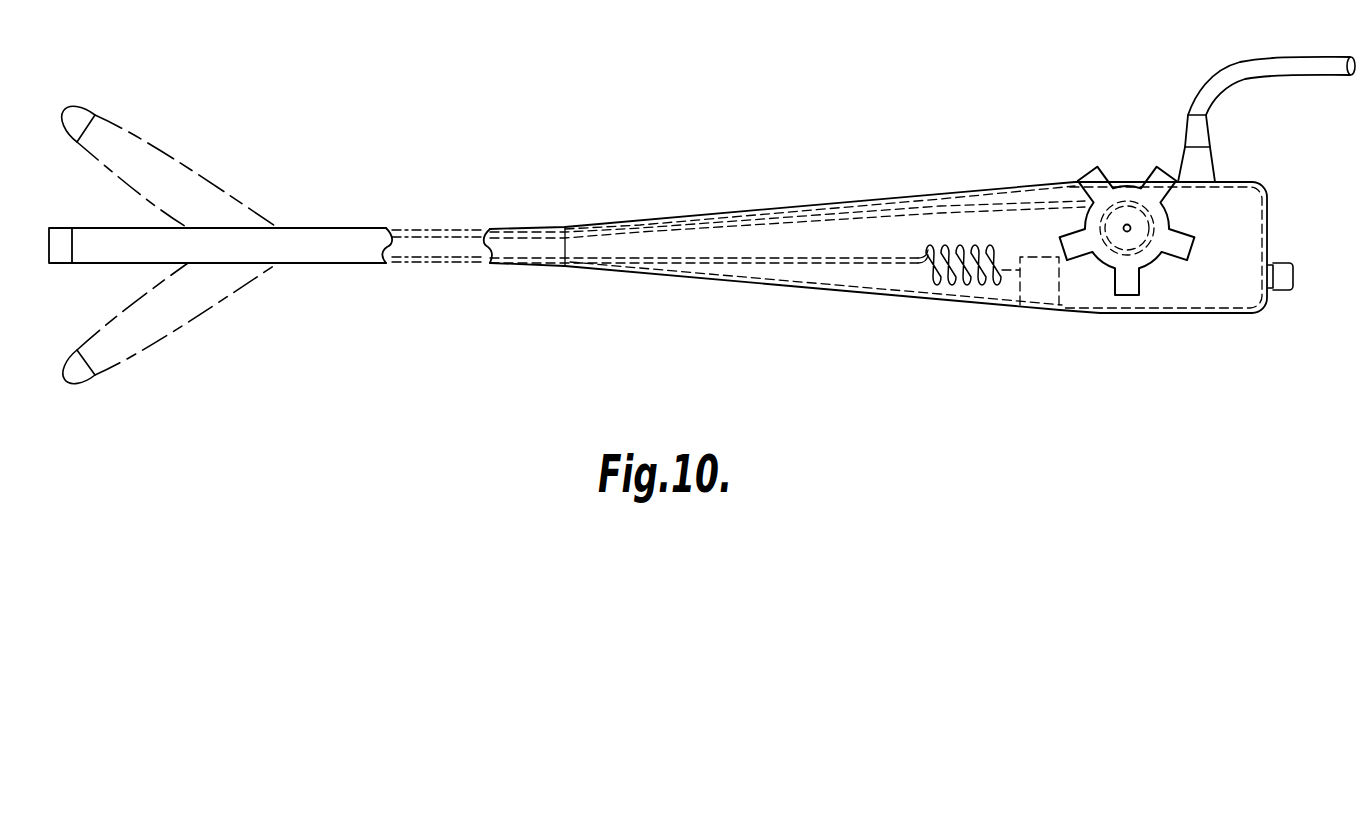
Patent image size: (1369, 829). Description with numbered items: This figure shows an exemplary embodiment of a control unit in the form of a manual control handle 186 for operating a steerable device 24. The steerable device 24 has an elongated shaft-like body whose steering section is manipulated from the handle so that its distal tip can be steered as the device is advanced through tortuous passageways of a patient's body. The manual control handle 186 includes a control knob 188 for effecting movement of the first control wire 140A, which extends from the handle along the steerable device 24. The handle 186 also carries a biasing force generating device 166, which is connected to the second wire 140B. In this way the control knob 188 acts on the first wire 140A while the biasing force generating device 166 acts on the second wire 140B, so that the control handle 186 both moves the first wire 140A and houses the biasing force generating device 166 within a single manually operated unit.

The steerable device 24 is at (248, 184).
The manual control handle 186 is at (756, 196).
The first control wire 140A is at (866, 213).
The second wire 140B is at (733, 264).
The biasing force generating device 166 is at (930, 287).
The control knob 188 is at (1158, 172).